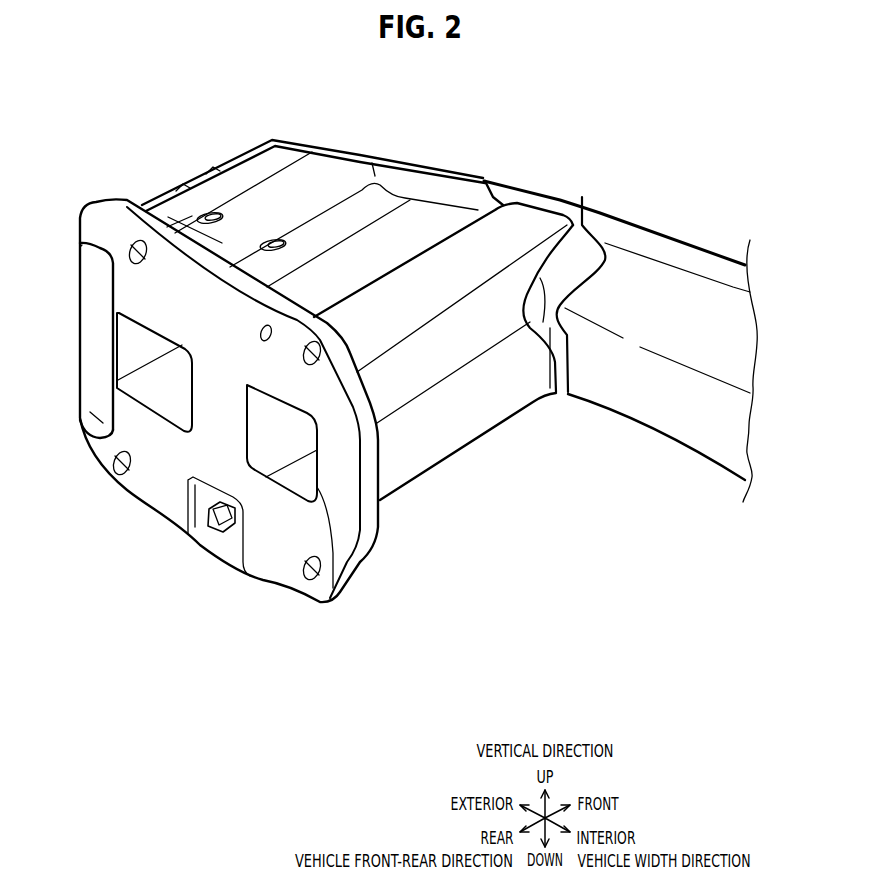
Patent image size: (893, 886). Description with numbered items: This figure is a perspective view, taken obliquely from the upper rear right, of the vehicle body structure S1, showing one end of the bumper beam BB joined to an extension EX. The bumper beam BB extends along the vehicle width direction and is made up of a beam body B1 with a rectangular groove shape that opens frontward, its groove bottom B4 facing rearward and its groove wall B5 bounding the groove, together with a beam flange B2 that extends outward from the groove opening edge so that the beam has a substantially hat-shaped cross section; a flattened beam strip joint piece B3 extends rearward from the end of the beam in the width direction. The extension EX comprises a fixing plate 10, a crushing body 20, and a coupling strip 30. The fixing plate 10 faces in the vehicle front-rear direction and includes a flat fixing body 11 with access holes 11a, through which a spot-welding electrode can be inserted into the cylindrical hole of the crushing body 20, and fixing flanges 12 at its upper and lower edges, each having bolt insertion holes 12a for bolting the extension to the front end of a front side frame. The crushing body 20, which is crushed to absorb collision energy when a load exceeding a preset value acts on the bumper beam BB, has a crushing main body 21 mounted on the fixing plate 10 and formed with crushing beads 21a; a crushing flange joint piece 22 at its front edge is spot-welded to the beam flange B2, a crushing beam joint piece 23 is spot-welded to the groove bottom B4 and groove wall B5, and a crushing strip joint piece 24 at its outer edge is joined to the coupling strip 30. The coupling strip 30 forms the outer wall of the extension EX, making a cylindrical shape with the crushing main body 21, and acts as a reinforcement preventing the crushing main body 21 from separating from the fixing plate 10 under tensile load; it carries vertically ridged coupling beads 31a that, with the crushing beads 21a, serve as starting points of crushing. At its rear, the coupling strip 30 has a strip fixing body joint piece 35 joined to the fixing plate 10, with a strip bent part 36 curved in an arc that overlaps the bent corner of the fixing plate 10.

The vehicle body structure S1 is at (494, 97).
The fixing plate 10 is at (217, 560).
The fixing body 11 is at (263, 505).
The access hole 11a is at (170, 497).
The fixing flange 12 is at (152, 440).
The bolt insertion hole 12a is at (128, 247).
The crushing body 20 is at (507, 423).
The crushing main body 21 is at (457, 423).
The crushing bead 21a is at (212, 214).
The crushing flange joint piece 22 is at (460, 197).
The crushing beam joint piece 23 is at (577, 203).
The crushing strip joint piece 24 is at (173, 210).
The coupling strip 30 is at (150, 200).
The coupling bead 31a is at (183, 186).
The strip fixing body joint piece 35 is at (103, 423).
The strip bent part 36 is at (70, 372).
The bumper beam BB is at (678, 207).
The beam body B1 is at (720, 360).
The beam flange B2 is at (628, 240).
The beam strip joint piece B3 is at (240, 155).
The groove bottom B4 is at (663, 413).
The groove wall B5 is at (697, 287).
The extension EX is at (403, 520).